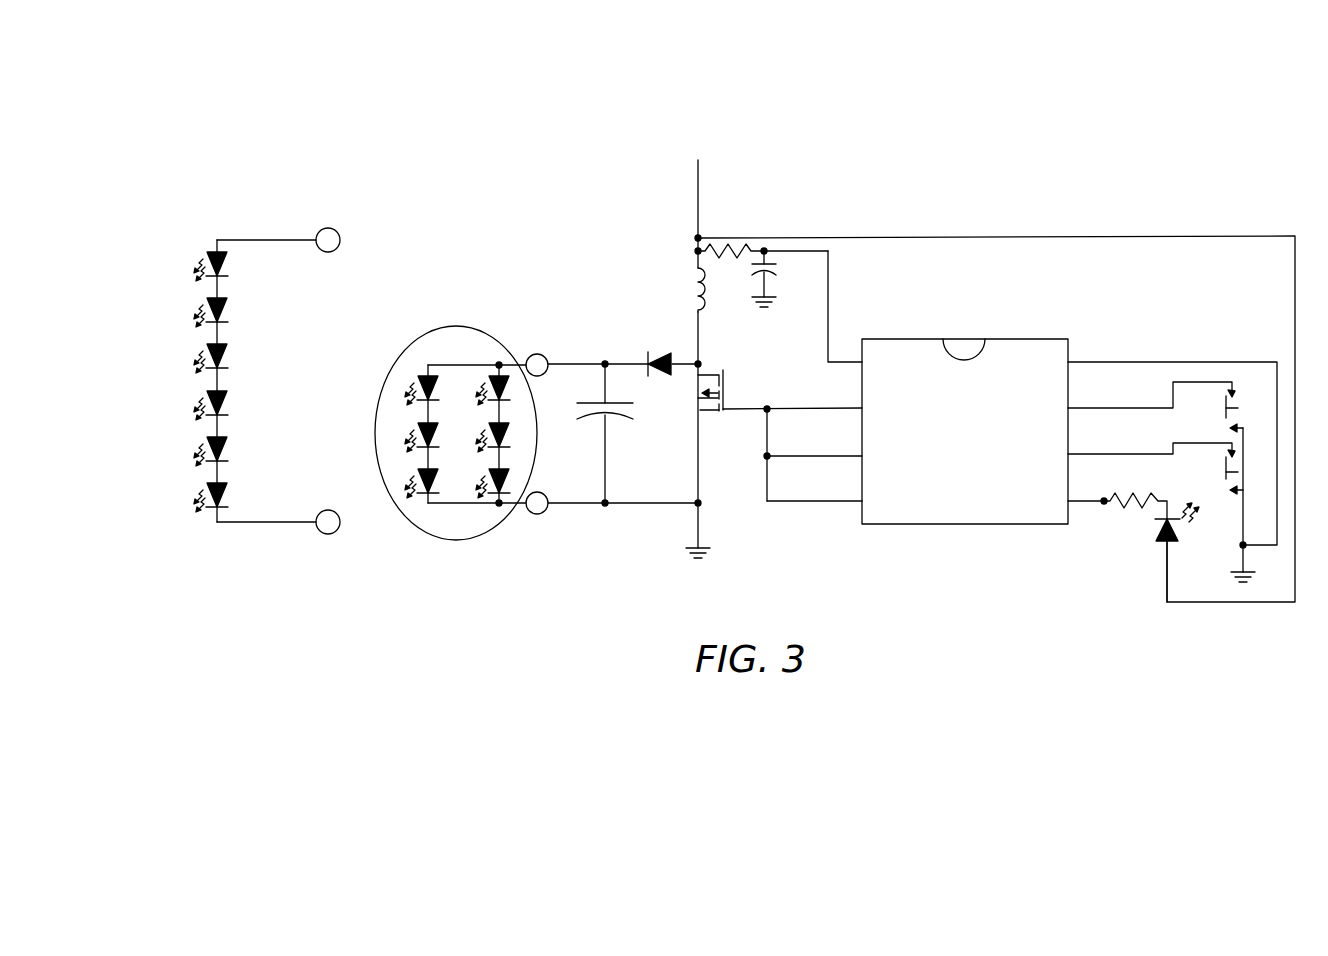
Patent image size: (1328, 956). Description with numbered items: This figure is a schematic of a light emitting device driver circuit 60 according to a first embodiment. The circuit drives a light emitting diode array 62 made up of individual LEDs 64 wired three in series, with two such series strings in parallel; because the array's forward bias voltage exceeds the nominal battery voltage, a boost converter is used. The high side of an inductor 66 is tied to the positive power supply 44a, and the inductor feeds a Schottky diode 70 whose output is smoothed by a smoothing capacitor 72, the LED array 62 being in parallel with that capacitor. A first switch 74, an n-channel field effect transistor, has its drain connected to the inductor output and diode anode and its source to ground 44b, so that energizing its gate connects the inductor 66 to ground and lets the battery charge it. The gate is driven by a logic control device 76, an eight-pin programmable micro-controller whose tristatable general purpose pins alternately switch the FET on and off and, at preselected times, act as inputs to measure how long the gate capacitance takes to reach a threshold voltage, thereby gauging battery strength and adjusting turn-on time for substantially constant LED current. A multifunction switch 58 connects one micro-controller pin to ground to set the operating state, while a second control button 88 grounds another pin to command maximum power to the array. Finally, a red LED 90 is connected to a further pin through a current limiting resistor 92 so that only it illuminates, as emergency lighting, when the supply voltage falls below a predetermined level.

The light emitting device driver circuit 60 is at (1120, 116).
The positive power supply 44a is at (698, 186).
The ground 44b is at (700, 520).
The light emitting diode array 62 is at (431, 537).
The individual LED 64 is at (508, 437).
The inductor 66 is at (704, 312).
The Schottky diode 70 is at (655, 376).
The smoothing capacitor 72 is at (608, 452).
The first switch 74 is at (728, 384).
The logic control device 76 is at (1020, 338).
The multifunction switch 58 is at (1224, 404).
The second control button 88 is at (1224, 480).
The red LED 90 is at (1160, 545).
The current limiting resistor 92 is at (1120, 505).